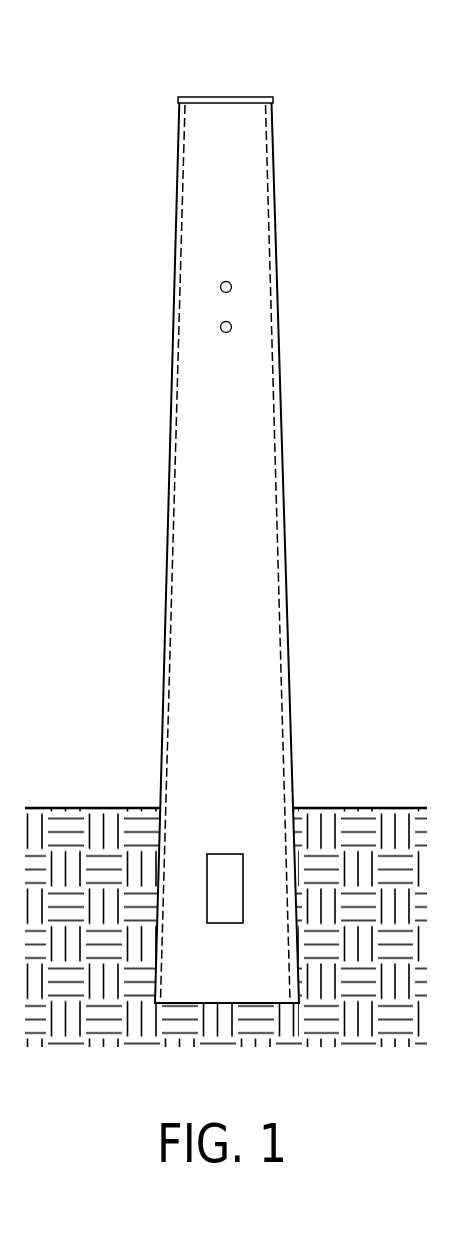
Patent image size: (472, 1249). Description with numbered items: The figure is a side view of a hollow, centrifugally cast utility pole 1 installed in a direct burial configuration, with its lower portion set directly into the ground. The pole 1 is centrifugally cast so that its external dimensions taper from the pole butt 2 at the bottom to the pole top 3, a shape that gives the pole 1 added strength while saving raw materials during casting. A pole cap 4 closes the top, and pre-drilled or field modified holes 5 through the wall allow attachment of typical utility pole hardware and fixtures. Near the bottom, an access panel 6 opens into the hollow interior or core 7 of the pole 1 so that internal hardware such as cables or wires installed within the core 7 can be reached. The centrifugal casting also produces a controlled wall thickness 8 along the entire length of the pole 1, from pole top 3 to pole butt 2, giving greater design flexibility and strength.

The utility pole 1 is at (174, 504).
The pole butt 2 is at (175, 967).
The pole top 3 is at (178, 128).
The pole cap 4 is at (228, 97).
The holes 5 is at (220, 287).
The access panel 6 is at (222, 862).
The core 7 is at (232, 615).
The wall thickness 8 is at (170, 543).